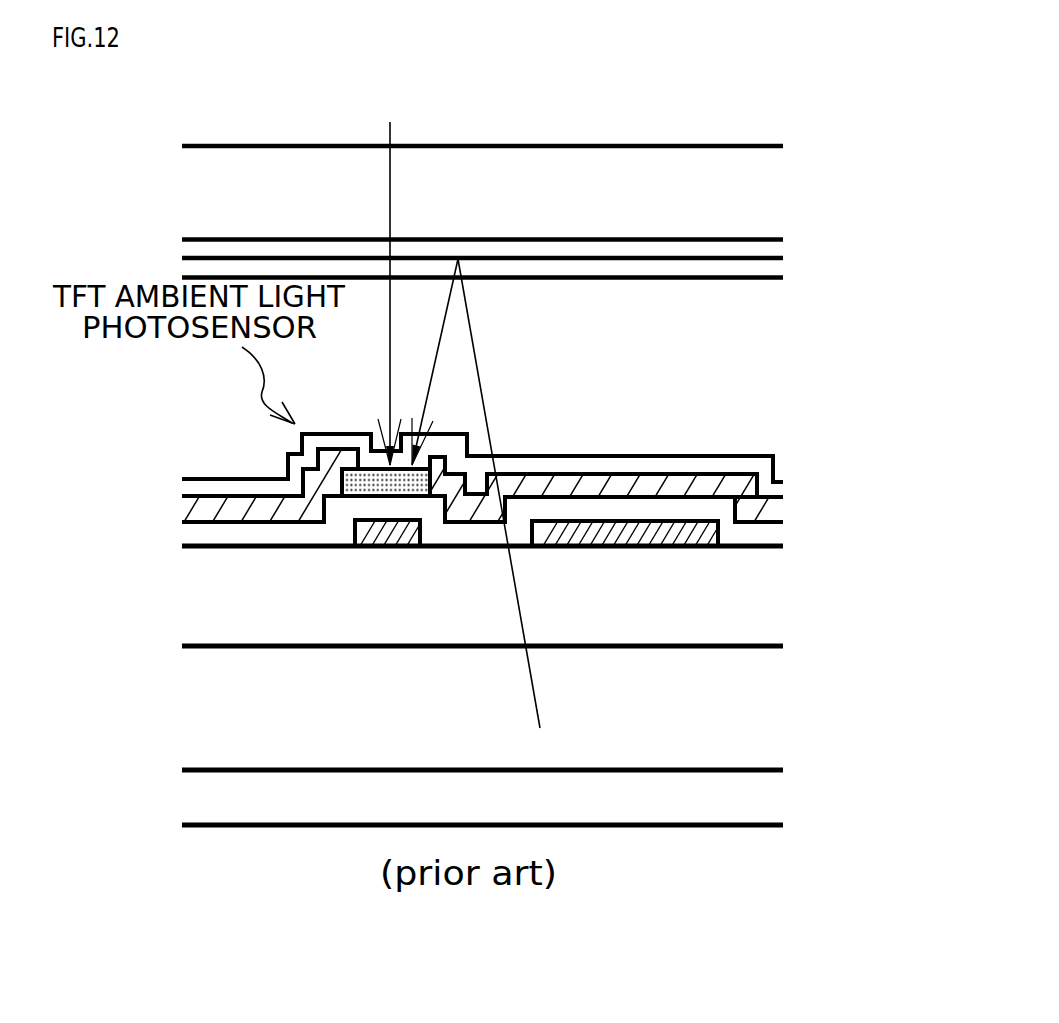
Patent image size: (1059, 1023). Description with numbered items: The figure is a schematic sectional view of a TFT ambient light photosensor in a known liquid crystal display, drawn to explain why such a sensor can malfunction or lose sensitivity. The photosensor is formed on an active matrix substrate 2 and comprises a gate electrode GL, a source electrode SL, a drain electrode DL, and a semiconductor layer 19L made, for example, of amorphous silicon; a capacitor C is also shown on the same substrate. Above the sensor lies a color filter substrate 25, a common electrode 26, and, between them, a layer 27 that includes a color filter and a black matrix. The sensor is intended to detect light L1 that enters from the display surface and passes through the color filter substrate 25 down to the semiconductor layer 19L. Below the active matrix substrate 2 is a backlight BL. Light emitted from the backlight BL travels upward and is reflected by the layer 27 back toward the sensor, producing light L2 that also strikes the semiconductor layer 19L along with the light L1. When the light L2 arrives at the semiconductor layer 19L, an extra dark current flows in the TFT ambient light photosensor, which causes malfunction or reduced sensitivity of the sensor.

The color filter substrate 25 is at (652, 180).
The common electrode 26 is at (672, 268).
The layer including a color filter and a black matrix 27 is at (732, 247).
The active matrix substrate 2 is at (742, 615).
The capacitor C is at (630, 560).
The semiconductor layer 19L is at (352, 492).
The gate electrode GL is at (388, 537).
The drain electrode DL is at (208, 507).
The source electrode SL is at (735, 497).
The light incident from the display surface L1 is at (378, 294).
The light incident on the semiconductor layer from backlight reflection L2 is at (476, 493).
The backlight BL is at (482, 797).